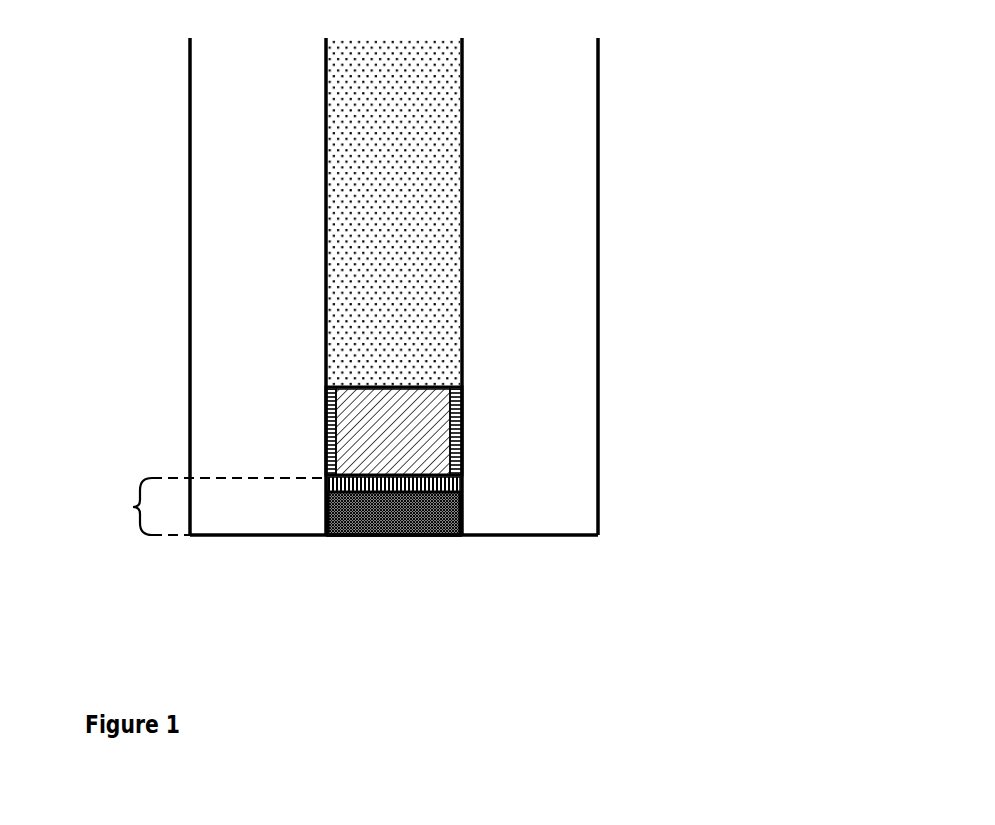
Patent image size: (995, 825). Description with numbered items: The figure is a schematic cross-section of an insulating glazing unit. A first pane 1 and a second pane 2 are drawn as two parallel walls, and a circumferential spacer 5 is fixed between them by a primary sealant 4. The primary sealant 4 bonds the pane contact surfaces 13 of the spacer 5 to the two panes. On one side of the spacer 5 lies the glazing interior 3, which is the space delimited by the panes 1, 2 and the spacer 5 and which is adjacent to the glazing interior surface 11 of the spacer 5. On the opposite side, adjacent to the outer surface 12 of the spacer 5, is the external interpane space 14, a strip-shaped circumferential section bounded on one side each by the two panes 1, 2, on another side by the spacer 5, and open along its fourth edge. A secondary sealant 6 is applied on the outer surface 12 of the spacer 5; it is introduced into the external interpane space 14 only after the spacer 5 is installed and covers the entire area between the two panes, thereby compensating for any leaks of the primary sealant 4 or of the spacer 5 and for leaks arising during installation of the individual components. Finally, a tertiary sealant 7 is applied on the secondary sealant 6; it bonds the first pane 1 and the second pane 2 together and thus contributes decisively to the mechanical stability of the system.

The first pane 1 is at (547, 270).
The second pane 2 is at (233, 147).
The glazing interior 3 is at (427, 195).
The primary sealant 4 is at (340, 403).
The spacer 5 is at (410, 450).
The secondary sealant 6 is at (440, 486).
The tertiary sealant 7 is at (440, 520).
The glazing interior surface 11 is at (326, 383).
The outer surface 12 is at (360, 493).
The pane contact surfaces 13 is at (326, 432).
The external interpane space 14 is at (134, 507).